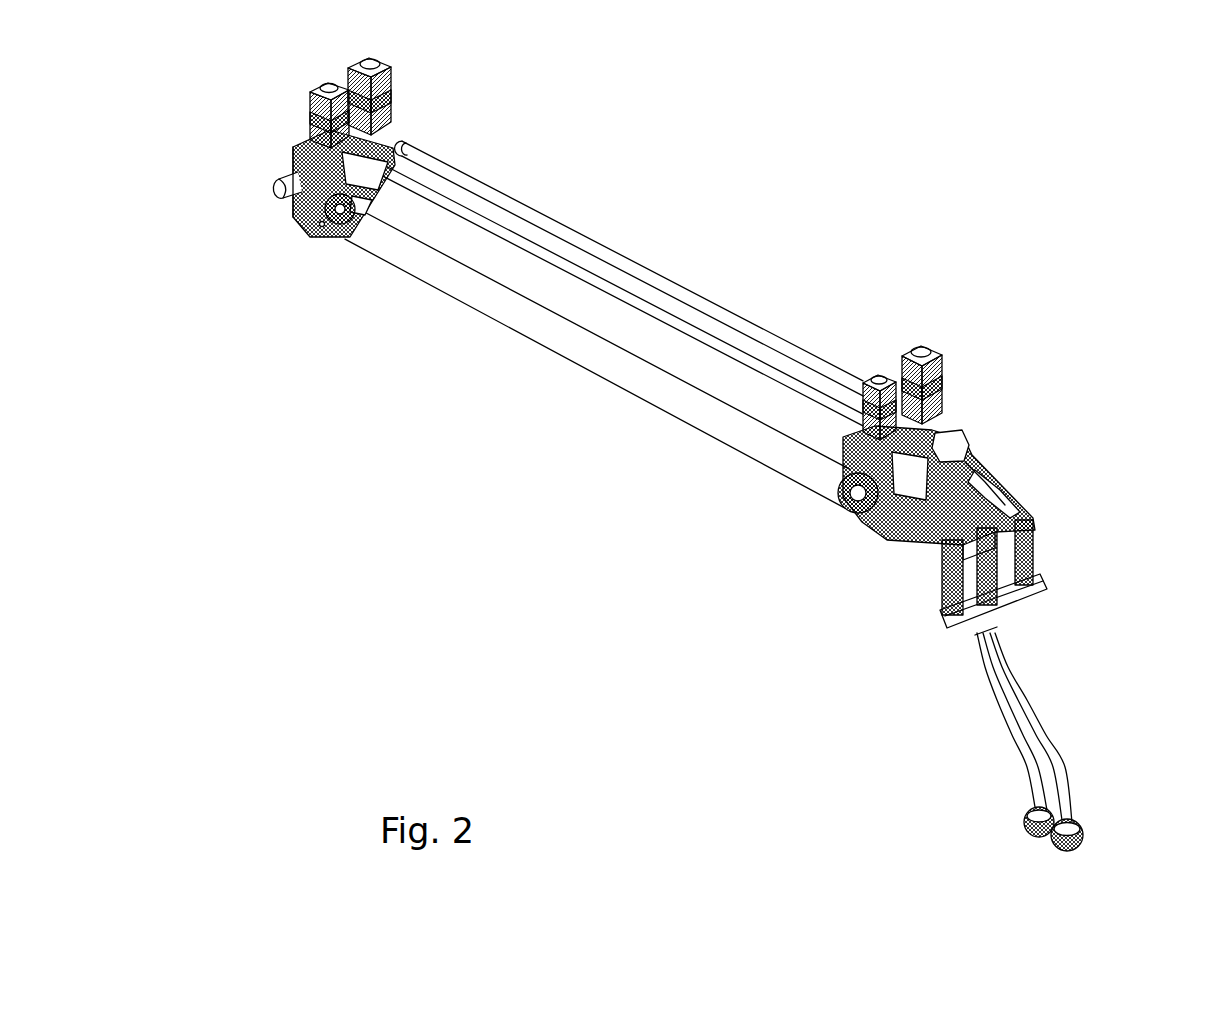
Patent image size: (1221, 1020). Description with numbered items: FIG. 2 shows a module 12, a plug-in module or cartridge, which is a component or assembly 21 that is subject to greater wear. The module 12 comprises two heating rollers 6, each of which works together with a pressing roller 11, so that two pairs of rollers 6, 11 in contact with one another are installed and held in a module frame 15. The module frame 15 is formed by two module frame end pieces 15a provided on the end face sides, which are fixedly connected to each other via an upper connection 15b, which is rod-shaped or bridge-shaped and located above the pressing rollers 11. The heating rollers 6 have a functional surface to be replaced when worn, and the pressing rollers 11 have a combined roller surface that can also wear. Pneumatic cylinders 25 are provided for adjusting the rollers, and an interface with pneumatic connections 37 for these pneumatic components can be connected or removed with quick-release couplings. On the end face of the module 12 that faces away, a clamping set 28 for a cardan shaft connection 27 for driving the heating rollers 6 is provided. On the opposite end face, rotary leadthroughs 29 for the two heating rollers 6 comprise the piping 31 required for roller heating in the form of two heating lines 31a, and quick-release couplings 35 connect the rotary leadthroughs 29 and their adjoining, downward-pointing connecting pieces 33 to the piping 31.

The heating roller 6 is at (558, 337).
The pressing roller 11 is at (537, 273).
The module 12 is at (707, 248).
The assembly 21 is at (640, 281).
The module frame 15 is at (295, 167).
The module frame end piece 15a is at (977, 440).
The upper connection 15b is at (740, 340).
The pneumatic cylinder 25 is at (393, 102).
The cardan shaft connection 27 is at (290, 177).
The clamping set 28 is at (265, 195).
The rotary leadthrough 29 is at (985, 483).
The piping 31 is at (1067, 720).
The heating line 31a is at (1030, 777).
The connecting piece 33 is at (930, 575).
The quick-release coupling 35 is at (1042, 551).
The pneumatic connection 37 is at (963, 467).